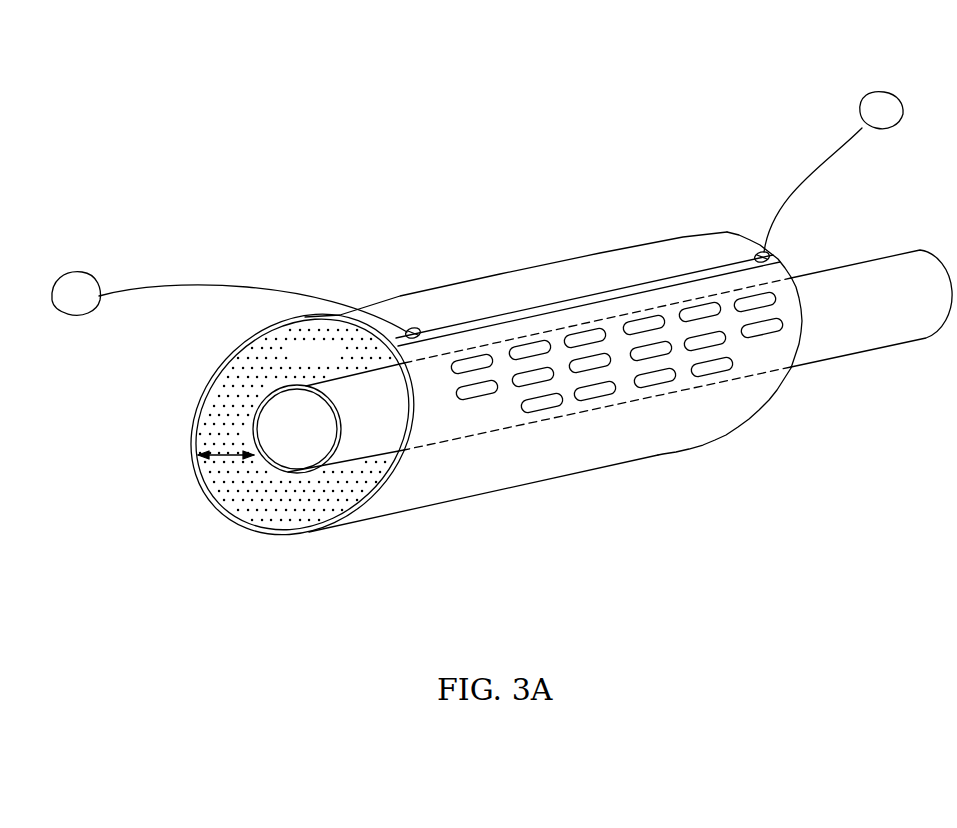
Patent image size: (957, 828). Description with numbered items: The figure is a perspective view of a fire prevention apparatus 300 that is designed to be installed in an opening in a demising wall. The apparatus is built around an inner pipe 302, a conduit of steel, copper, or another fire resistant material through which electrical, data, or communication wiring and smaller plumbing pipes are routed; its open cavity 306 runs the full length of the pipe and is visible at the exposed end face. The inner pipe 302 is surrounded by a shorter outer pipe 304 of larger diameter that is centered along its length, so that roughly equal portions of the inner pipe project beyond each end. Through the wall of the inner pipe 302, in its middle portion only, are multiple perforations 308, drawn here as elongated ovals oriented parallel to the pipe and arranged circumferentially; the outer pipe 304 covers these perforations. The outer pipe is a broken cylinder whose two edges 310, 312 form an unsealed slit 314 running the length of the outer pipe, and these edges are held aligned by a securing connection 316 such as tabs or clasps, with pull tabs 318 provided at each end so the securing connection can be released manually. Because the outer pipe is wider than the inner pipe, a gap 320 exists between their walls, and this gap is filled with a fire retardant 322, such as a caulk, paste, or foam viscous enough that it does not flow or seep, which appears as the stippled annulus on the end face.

The fire prevention apparatus 300 is at (306, 196).
The inner pipe 302 is at (858, 353).
The outer pipe 304 is at (535, 480).
The cavity 306 is at (320, 444).
The perforations 308 is at (483, 398).
The edge 310 is at (507, 310).
The edge 312 is at (578, 317).
The slit 314 is at (694, 272).
The securing connection 316 is at (412, 326).
The pull tabs 318 is at (475, 191).
The gap 320 is at (199, 428).
The fire retardant 322 is at (337, 364).